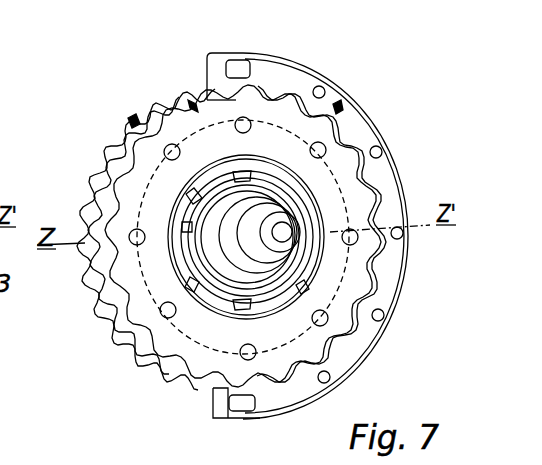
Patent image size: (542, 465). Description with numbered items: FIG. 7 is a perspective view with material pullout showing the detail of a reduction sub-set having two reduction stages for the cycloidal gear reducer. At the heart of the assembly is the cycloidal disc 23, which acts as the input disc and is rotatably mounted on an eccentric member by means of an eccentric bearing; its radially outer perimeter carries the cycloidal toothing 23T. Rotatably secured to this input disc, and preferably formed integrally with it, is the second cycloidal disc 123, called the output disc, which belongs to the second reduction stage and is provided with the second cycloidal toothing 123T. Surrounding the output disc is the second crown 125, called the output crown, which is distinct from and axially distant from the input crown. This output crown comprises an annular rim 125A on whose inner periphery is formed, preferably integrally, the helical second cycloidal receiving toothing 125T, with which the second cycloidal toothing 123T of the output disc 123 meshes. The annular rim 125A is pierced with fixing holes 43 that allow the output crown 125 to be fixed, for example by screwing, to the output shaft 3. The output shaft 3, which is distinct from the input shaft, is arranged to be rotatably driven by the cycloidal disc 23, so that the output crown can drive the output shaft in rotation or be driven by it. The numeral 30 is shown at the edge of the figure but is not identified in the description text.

The output shaft 3 is at (253, 242).
The cycloidal disc 23 is at (119, 149).
The cycloidal toothing 23T is at (134, 121).
The housing 30 is at (13, 170).
The fixing holes 43 is at (381, 320).
The second cycloidal disc 123 is at (227, 130).
The second cycloidal toothing 123T is at (194, 102).
The second crown 125 is at (393, 153).
The annular rim 125A is at (354, 127).
The second cycloidal receiving toothing 125T is at (338, 108).